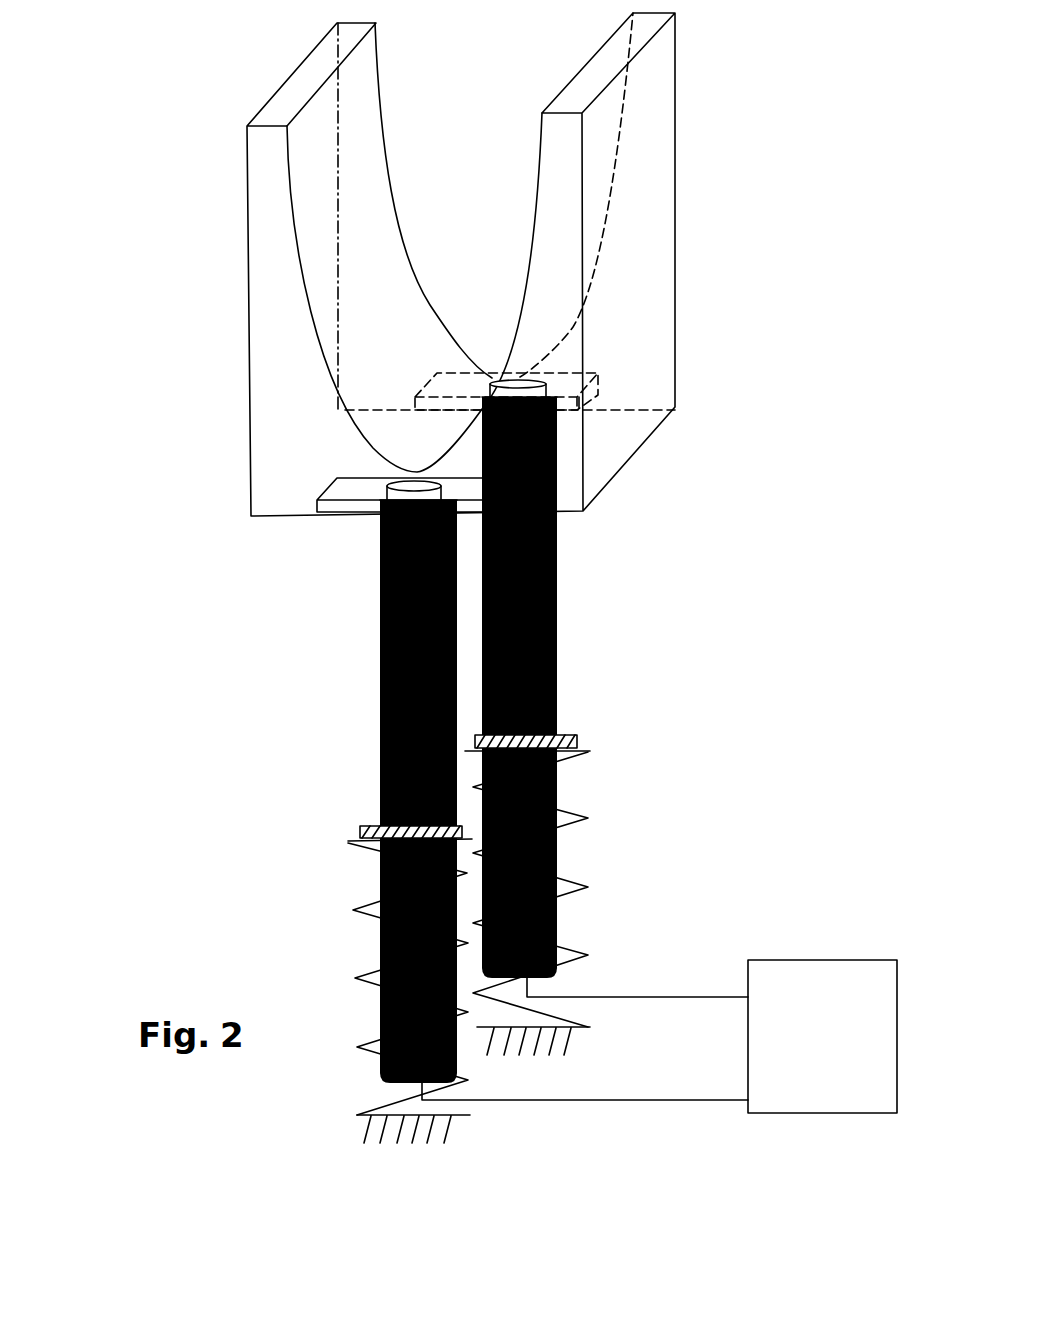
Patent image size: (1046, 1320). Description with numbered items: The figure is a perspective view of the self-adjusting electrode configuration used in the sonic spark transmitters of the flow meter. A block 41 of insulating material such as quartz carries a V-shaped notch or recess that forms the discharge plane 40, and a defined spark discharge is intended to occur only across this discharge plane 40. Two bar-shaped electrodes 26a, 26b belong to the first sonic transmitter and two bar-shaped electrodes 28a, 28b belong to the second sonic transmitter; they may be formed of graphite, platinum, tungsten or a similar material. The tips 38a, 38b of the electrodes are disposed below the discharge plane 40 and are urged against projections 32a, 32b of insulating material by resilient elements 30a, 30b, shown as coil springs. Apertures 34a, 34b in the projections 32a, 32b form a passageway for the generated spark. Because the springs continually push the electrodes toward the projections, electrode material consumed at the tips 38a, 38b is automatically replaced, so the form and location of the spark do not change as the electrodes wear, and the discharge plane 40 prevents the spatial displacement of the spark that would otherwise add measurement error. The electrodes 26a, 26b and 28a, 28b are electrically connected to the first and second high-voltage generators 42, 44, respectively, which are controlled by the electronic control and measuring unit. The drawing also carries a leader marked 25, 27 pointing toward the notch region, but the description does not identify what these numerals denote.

The block 41 is at (652, 233).
The curved support surface 25 is at (316, 292).
The curved support surface 27 is at (407, 377).
The discharge plane 40 is at (438, 447).
The projection 32a is at (458, 378).
The projection 32b is at (357, 490).
The aperture 34a is at (387, 470).
The aperture 34b is at (540, 372).
The tip 38a is at (557, 412).
The tip 38b is at (372, 516).
The bar-shaped electrode 26a is at (656, 687).
The bar-shaped electrode 28a is at (557, 640).
The bar-shaped electrode 26b is at (259, 791).
The bar-shaped electrode 28b is at (380, 705).
The resilient element 30a is at (557, 812).
The resilient element 30b is at (358, 905).
The first high-voltage generator 42 is at (659, 968).
The second high-voltage generator 44 is at (832, 1013).